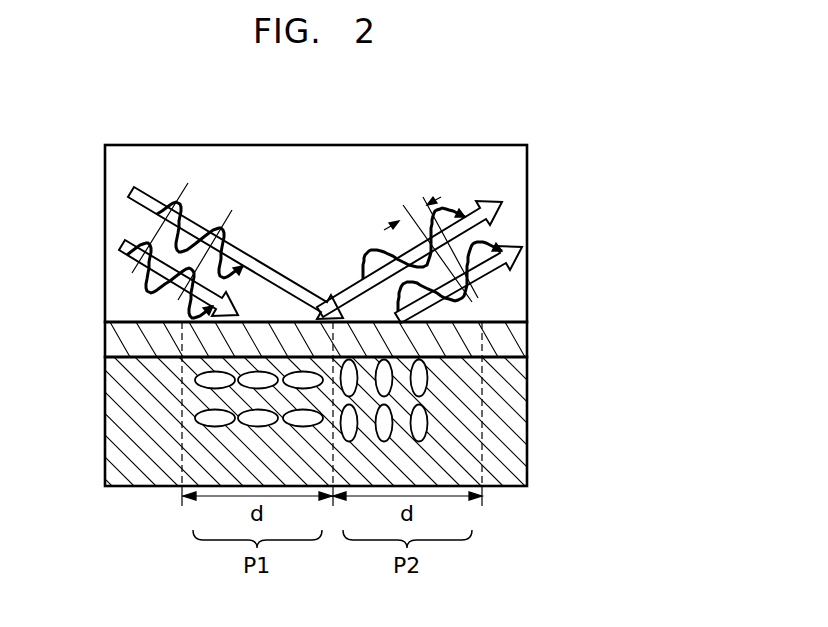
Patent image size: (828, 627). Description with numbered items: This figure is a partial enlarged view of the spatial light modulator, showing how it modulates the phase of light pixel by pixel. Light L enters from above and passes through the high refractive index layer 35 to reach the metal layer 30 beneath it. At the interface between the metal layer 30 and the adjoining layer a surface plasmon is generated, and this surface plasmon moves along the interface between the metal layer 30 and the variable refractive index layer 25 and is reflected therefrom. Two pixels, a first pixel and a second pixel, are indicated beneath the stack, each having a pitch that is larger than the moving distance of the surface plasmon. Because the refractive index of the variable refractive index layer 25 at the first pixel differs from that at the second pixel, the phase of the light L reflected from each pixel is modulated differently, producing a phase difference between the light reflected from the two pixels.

The high refractive index layer 35 is at (516, 290).
The metal layer 30 is at (516, 340).
The variable refractive index layer 25 is at (516, 405).
The light L is at (133, 263).